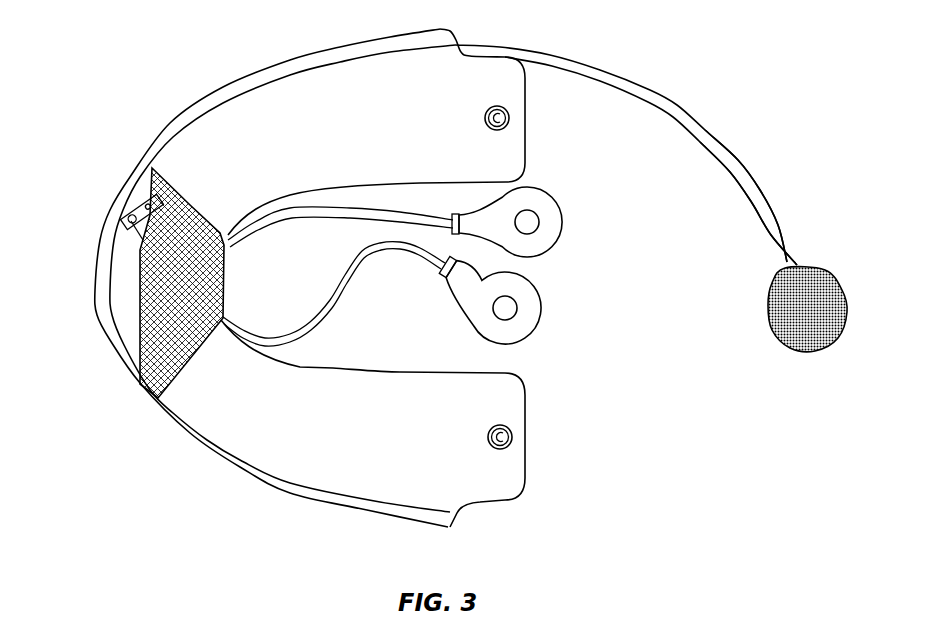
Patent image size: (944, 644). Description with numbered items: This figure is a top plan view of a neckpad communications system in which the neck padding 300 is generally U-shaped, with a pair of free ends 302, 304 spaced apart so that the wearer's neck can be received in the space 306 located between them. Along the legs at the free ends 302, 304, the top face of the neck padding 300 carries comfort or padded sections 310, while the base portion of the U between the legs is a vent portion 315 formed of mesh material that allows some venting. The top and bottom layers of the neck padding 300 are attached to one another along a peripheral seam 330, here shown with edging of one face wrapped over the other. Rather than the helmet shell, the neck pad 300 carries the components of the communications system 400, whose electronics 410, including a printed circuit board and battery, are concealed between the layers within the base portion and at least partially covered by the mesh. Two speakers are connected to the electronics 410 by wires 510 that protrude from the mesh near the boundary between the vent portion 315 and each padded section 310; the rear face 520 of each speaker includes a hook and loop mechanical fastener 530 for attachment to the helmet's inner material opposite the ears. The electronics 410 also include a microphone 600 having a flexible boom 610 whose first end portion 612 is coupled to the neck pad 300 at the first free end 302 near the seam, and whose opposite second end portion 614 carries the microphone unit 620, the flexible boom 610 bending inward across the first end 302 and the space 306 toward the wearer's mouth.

The neck padding 300 is at (139, 406).
The first free end 302 is at (513, 88).
The second free end 304 is at (516, 392).
The space 306 is at (458, 332).
The padded section 310 is at (509, 118).
The vent portion 315 is at (220, 283).
The peripheral seam 330 is at (203, 448).
The communications system 400 is at (109, 178).
The electronics 410 is at (133, 237).
The wire 510 is at (343, 280).
The rear face 520 is at (541, 313).
The mechanical fastener 530 is at (562, 226).
The microphone 600 is at (680, 102).
The flexible boom 610 is at (738, 160).
The first end portion 612 is at (474, 39).
The second end portion 614 is at (767, 210).
The microphone unit 620 is at (803, 350).